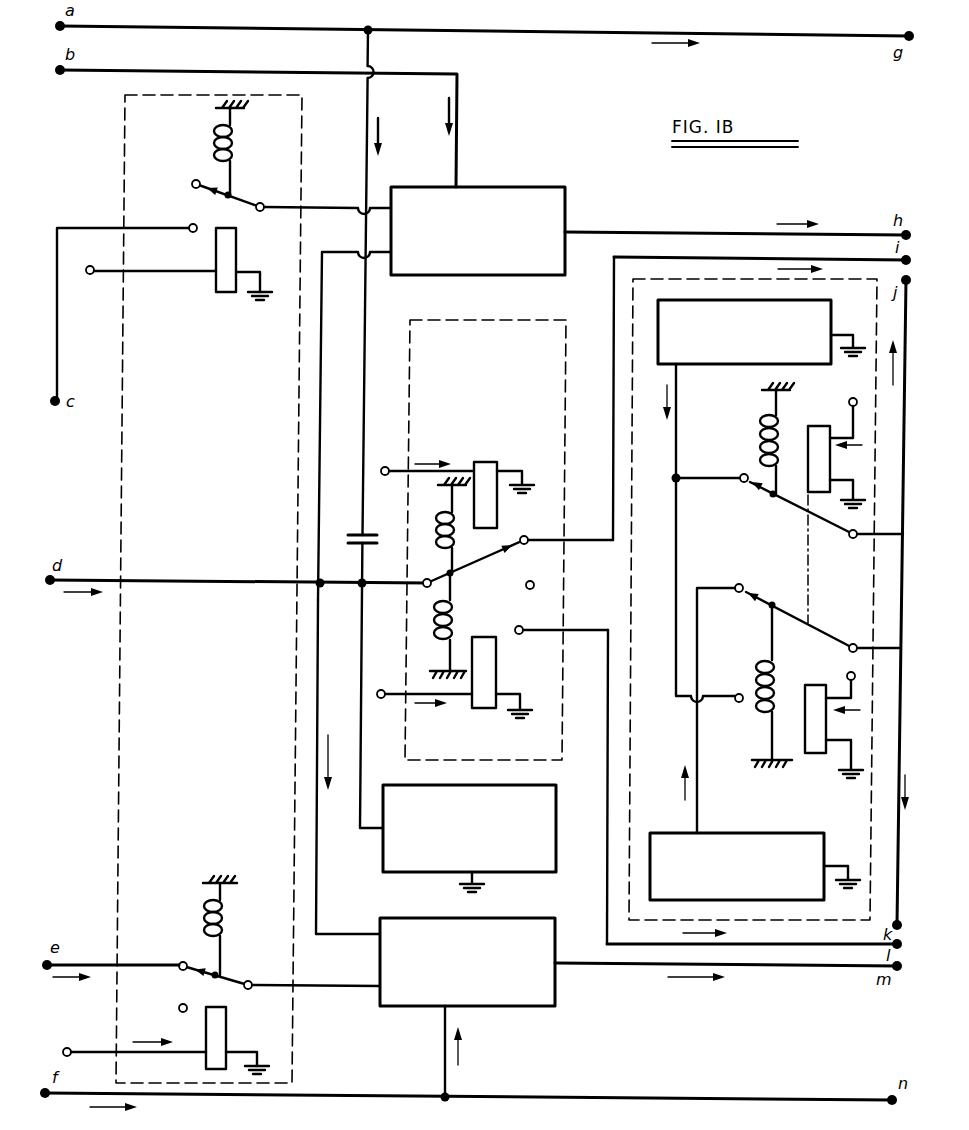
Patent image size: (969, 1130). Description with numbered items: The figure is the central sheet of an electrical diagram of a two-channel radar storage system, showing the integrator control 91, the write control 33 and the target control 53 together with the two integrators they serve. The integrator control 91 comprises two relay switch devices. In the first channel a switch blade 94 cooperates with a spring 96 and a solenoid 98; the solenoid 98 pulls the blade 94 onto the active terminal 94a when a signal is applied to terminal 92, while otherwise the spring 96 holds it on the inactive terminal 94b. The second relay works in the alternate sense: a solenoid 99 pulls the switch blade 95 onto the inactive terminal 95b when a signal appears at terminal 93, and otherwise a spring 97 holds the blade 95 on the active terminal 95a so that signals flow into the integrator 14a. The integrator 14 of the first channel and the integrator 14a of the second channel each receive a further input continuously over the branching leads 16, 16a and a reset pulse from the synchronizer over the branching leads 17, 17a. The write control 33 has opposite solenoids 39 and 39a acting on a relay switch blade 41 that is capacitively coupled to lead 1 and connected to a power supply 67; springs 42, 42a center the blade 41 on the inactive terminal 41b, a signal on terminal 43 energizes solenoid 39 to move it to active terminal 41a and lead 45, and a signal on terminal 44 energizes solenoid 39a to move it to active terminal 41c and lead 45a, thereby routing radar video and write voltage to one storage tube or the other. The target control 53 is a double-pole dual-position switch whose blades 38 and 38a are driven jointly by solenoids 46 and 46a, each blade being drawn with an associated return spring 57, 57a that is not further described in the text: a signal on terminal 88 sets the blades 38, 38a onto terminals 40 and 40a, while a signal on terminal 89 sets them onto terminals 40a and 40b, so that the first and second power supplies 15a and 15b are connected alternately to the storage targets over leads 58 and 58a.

The lead 1 is at (545, 32).
The second integrator 14 is at (513, 187).
The second integrator 14a is at (538, 1006).
The first power supply 15a is at (760, 364).
The second power supply 15b is at (773, 833).
The branching lead 16 is at (321, 462).
The branching lead 16a is at (318, 707).
The branching lead 17 is at (458, 135).
The branching lead 17a is at (333, 1095).
The write control 33 is at (452, 312).
The switch blade 38 is at (830, 523).
The switch blade 38a is at (838, 612).
The solenoid 39 is at (486, 462).
The solenoid 39a is at (482, 708).
The active terminal 40 is at (743, 474).
The active terminal 40a is at (742, 593).
The active terminal 40b is at (739, 702).
The relay switch blade 41 is at (470, 564).
The active terminal 41a is at (524, 536).
The inactive terminal 41b is at (535, 585).
The active terminal 41c is at (520, 634).
The spring 42 is at (440, 548).
The spring 42a is at (462, 628).
The terminal 43 is at (385, 467).
The terminal 44 is at (381, 698).
The lead 45 is at (613, 300).
The lead 45a is at (607, 770).
The solenoid 46 is at (822, 408).
The solenoid 46a is at (817, 753).
The target control 53 is at (726, 268).
The relay winding 57 is at (765, 430).
The relay winding 57a is at (762, 672).
The lead 58 is at (901, 536).
The lead 58a is at (901, 650).
The power supply 67 is at (397, 873).
The terminal 88 is at (855, 398).
The terminal 89 is at (848, 672).
The integrator control 91 is at (112, 522).
The terminal 92 is at (88, 275).
The terminal 93 is at (78, 1020).
The switch blade 94 is at (263, 201).
The active terminal 94a is at (193, 232).
The inactive terminal 94b is at (196, 180).
The switch blade 95 is at (245, 979).
The active terminal 95a is at (183, 962).
The inactive terminal 95b is at (181, 1007).
The spring 96 is at (238, 145).
The spring 97 is at (228, 932).
The solenoid 98 is at (222, 292).
The solenoid 99 is at (226, 1035).